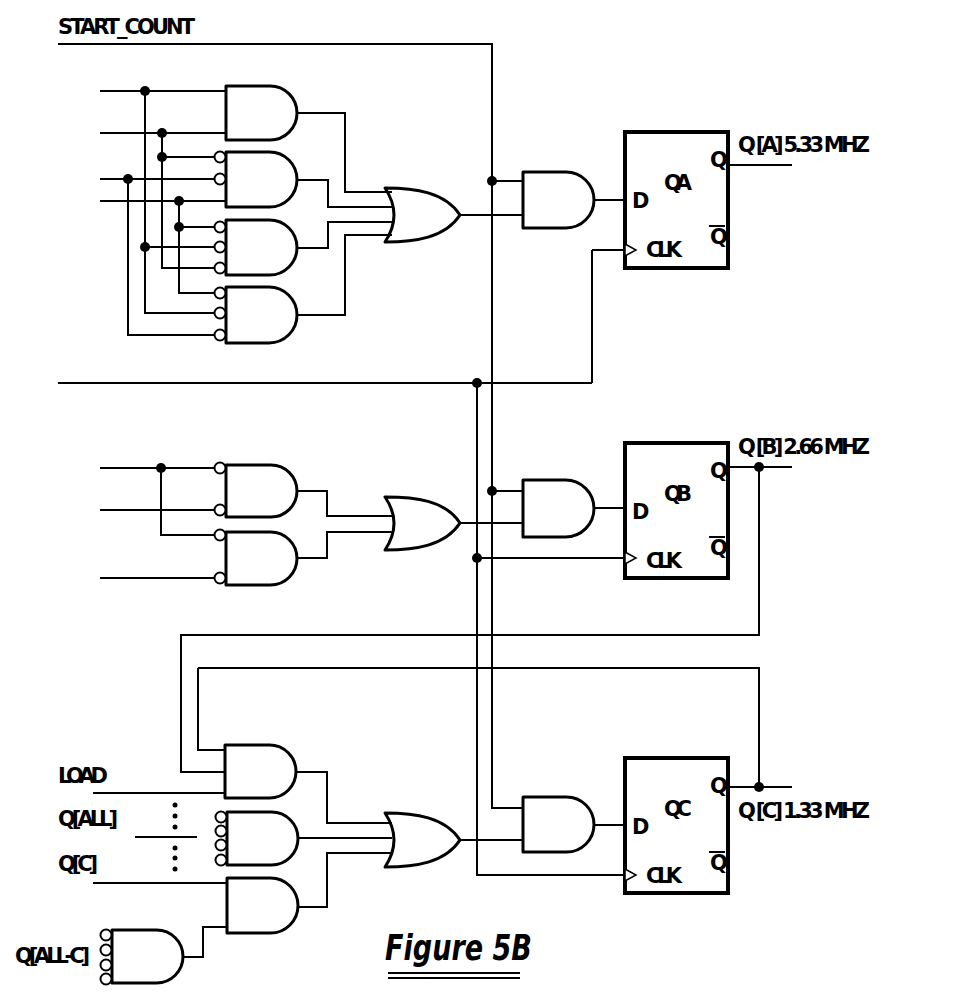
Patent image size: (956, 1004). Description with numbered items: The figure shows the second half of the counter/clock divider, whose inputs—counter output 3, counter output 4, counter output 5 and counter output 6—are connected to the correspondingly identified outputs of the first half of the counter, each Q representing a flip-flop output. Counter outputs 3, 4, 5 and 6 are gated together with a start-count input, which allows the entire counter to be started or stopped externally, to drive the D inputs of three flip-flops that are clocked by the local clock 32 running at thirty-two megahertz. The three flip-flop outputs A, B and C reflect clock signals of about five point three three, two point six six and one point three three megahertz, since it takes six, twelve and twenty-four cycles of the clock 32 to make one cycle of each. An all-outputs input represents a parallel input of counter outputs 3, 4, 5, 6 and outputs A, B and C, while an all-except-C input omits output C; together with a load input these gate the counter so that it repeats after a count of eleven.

The 32 MHz clock signal 32 is at (341, 614).
The counter output bit Q[3] 3 is at (142, 362).
The counter output bit Q[4] 4 is at (142, 301).
The counter output bit Q[5] 5 is at (142, 356).
The counter output bit Q[6] 6 is at (136, 251).